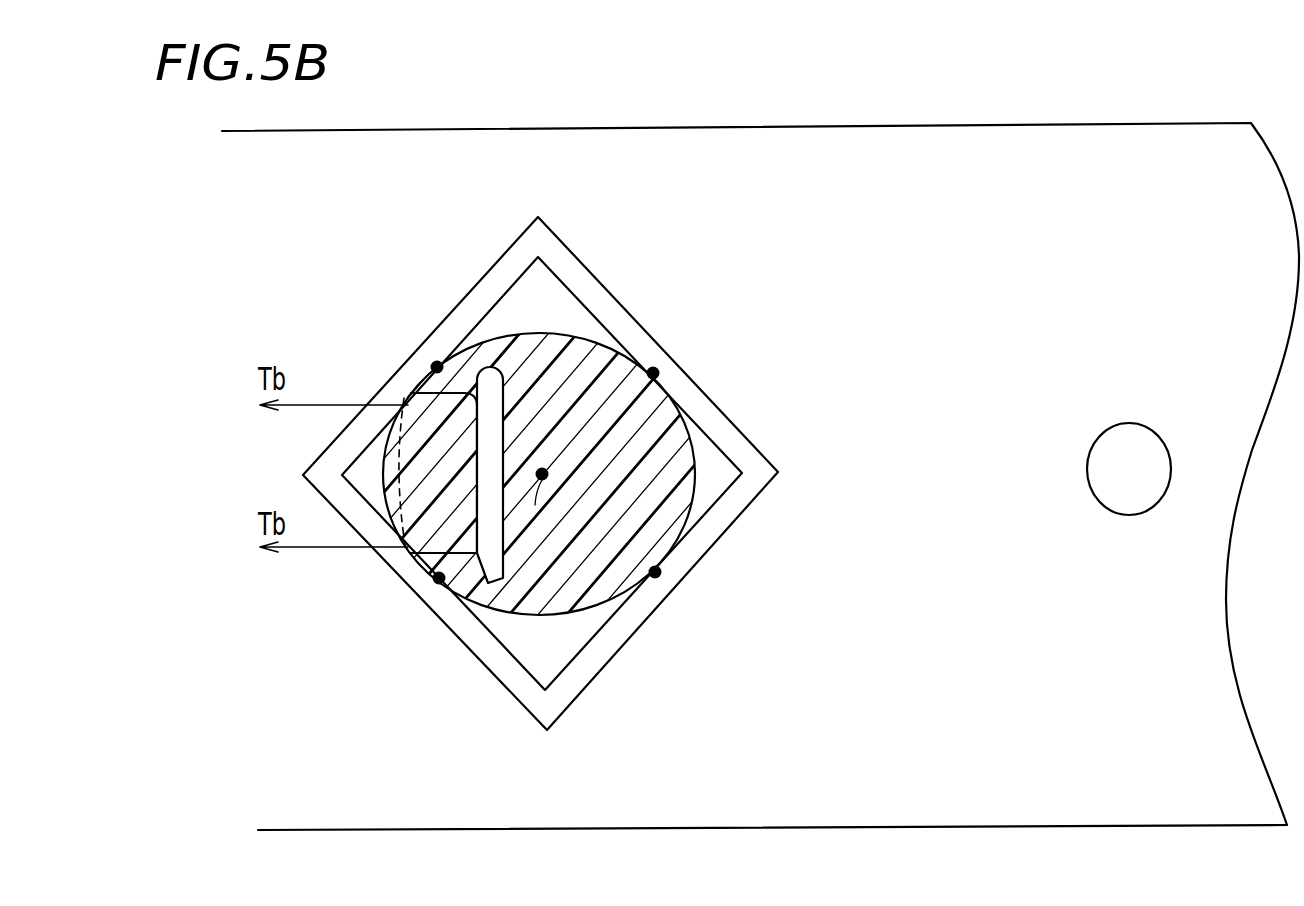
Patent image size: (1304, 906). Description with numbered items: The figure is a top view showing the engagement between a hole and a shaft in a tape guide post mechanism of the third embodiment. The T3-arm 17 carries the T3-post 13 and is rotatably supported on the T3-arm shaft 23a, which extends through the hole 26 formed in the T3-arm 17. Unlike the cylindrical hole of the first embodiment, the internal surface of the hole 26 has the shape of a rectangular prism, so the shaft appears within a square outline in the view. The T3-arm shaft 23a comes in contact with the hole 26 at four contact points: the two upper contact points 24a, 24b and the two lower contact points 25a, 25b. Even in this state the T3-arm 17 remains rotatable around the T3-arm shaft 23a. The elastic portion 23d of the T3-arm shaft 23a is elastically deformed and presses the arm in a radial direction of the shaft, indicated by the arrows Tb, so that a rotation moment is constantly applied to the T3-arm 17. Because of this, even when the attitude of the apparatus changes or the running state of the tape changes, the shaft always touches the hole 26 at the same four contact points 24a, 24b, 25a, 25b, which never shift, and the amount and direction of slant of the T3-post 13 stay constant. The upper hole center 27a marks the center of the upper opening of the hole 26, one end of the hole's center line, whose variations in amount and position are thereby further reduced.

The T3-arm 17 is at (929, 130).
The T3-post 13 is at (1111, 440).
The hole 26 is at (505, 653).
The T3-arm shaft 23a is at (591, 596).
The elastic portion 23d is at (398, 470).
The upper hole center 27a is at (490, 588).
The lower contact point 25b is at (437, 367).
The upper contact point 24b is at (658, 368).
The lower contact point 25a is at (439, 578).
The upper contact point 24a is at (658, 578).